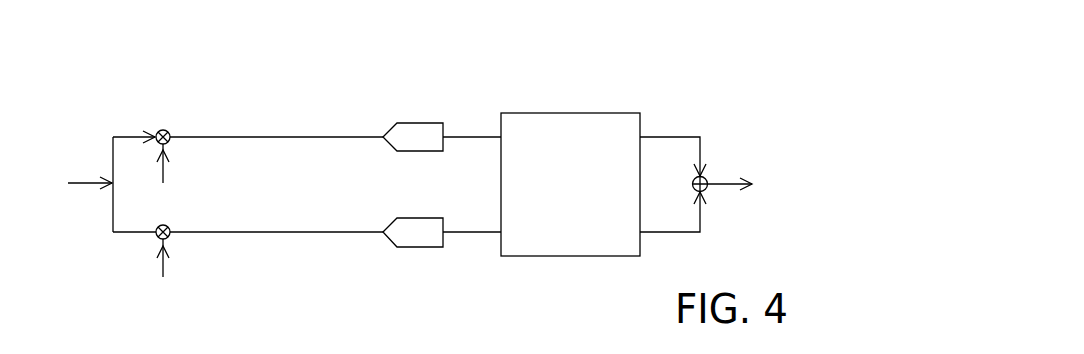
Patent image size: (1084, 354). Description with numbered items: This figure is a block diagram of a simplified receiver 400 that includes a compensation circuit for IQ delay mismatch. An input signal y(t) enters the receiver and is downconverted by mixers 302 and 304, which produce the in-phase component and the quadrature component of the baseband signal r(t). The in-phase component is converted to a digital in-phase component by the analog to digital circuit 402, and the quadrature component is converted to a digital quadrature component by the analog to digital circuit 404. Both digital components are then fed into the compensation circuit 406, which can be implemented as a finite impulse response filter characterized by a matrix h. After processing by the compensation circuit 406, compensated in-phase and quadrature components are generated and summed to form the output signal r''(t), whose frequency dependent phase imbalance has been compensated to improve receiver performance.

The receiver 400 is at (412, 177).
The mixer 302 is at (163, 128).
The mixer 304 is at (170, 237).
The analog to digital circuit 402 is at (420, 122).
The analog to digital circuit 404 is at (420, 247).
The compensation circuit 406 is at (570, 113).